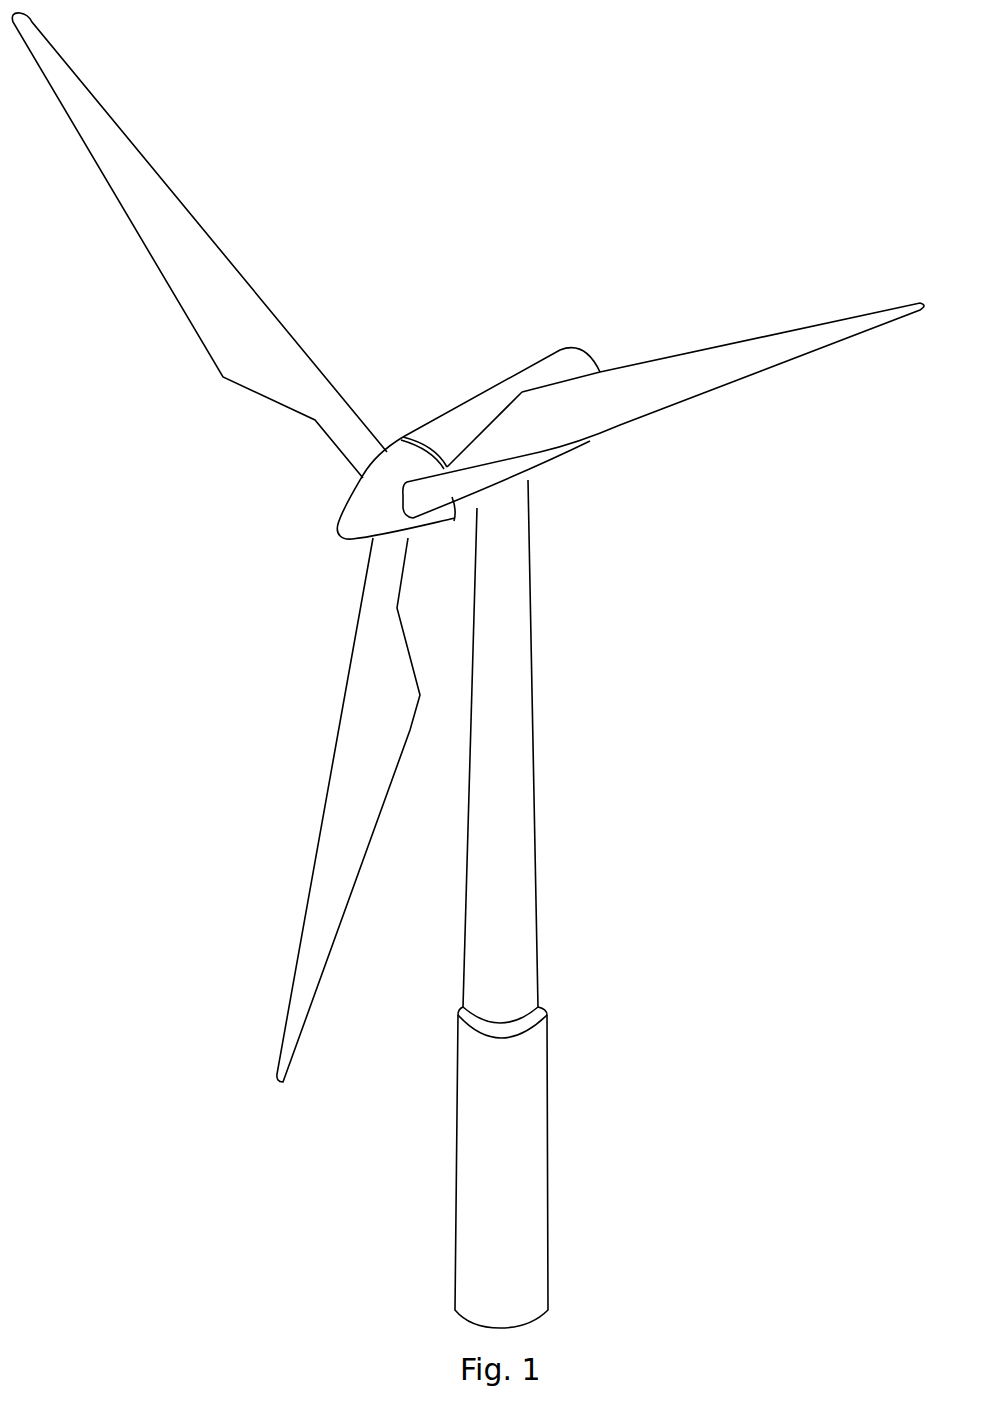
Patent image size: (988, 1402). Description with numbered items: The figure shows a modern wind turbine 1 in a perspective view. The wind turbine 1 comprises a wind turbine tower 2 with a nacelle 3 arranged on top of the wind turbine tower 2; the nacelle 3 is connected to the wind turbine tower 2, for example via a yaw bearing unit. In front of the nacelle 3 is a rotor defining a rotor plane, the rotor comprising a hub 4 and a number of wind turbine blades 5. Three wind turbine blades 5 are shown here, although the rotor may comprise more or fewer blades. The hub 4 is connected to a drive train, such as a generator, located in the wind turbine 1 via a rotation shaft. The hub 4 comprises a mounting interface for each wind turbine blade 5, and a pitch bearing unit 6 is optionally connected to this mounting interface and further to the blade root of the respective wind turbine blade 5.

The wind turbine 1 is at (646, 835).
The wind turbine tower 2 is at (522, 748).
The nacelle 3 is at (463, 417).
The hub 4 is at (360, 512).
The wind turbine blades 5 is at (237, 345).
The pitch bearing unit 6 is at (406, 528).